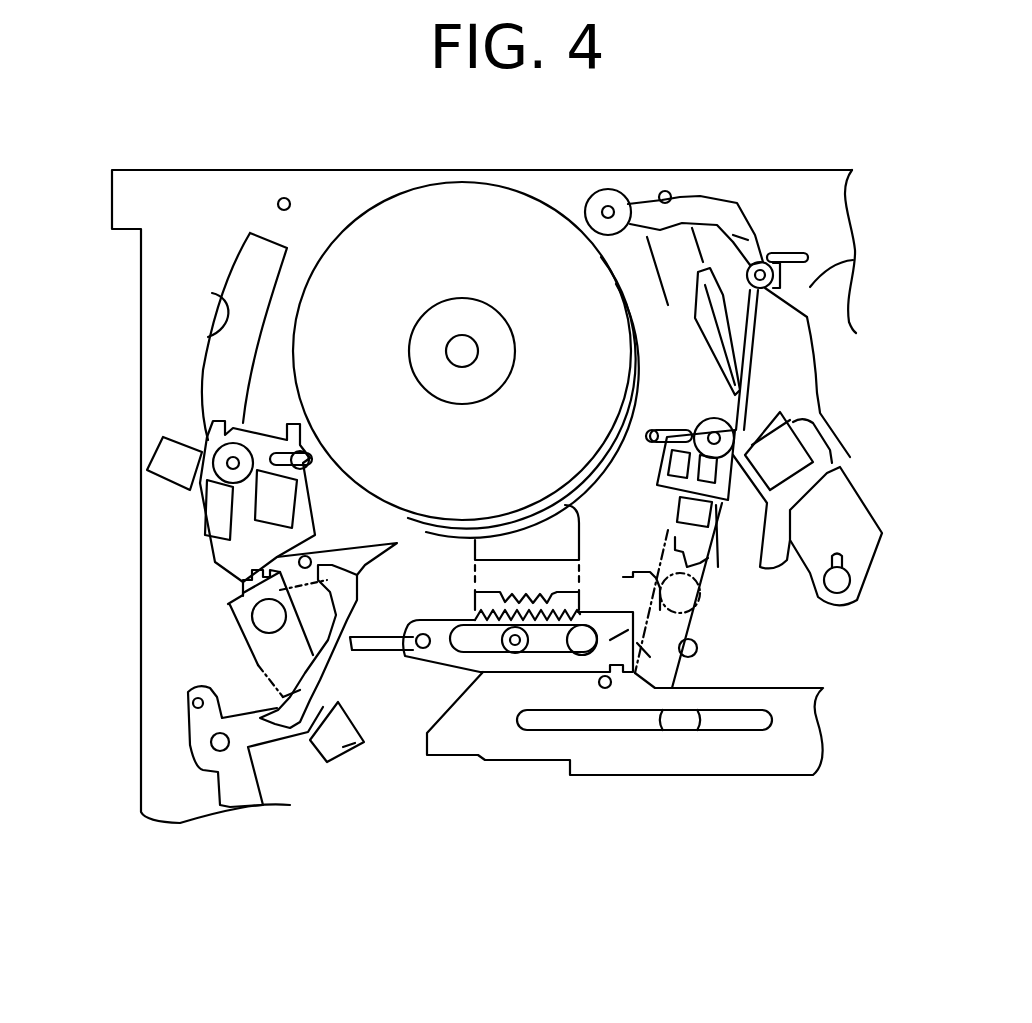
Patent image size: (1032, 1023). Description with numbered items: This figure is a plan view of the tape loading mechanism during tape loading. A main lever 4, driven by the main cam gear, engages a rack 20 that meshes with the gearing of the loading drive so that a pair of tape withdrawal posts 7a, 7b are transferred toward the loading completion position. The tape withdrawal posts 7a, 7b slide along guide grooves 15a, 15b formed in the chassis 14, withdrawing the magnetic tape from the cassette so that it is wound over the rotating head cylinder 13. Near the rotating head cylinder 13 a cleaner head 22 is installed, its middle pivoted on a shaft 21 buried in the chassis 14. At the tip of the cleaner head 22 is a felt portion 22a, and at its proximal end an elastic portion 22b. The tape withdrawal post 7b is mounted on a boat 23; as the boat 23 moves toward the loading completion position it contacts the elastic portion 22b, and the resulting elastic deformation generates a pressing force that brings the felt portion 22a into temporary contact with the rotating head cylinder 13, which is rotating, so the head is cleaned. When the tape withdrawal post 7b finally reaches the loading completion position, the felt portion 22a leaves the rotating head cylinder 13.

The main lever 4 is at (727, 762).
The tape withdrawal post 7a is at (280, 440).
The tape withdrawal post 7b is at (740, 436).
The rotating head cylinder 13 is at (440, 210).
The chassis 14 is at (187, 793).
The guide groove 15a is at (212, 293).
The guide groove 15b is at (655, 662).
The rack 20 is at (415, 656).
The shaft 21 is at (760, 258).
The cleaner head 22 is at (742, 207).
The felt portion 22a is at (607, 190).
The elastic portion 22b is at (723, 345).
The boat 23 is at (667, 487).